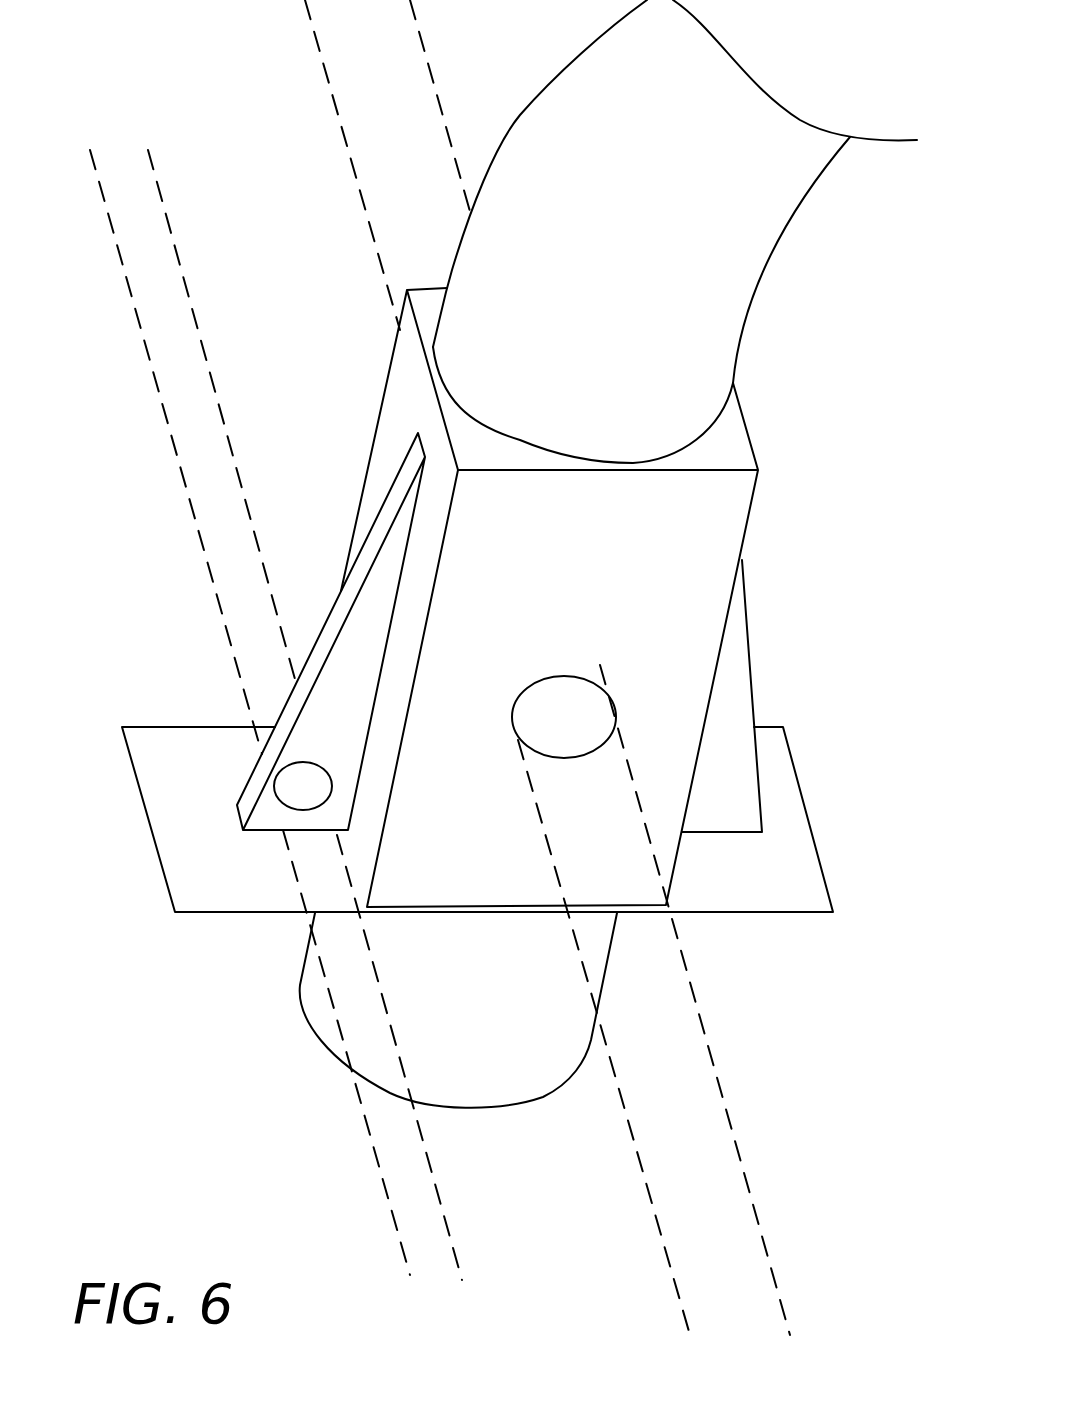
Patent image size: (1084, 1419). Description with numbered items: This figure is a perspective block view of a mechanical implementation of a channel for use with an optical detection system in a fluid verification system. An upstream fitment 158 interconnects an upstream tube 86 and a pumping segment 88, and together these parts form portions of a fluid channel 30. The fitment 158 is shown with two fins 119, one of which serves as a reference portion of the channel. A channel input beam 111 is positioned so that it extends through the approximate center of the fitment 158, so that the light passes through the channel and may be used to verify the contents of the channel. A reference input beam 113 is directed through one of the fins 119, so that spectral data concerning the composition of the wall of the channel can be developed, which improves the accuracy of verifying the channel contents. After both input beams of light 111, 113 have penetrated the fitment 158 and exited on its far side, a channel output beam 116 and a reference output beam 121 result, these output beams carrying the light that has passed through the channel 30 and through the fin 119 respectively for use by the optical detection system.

The fluid channel 30 is at (755, 297).
The upstream tube 86 is at (820, 177).
The pumping segment 88 is at (545, 1100).
The channel input beam 111 is at (688, 1060).
The reference input beam 113 is at (393, 1145).
The channel output beam 116 is at (382, 45).
The fins 119 is at (372, 545).
The reference output beam 121 is at (162, 258).
The upstream fitment 158 is at (732, 453).